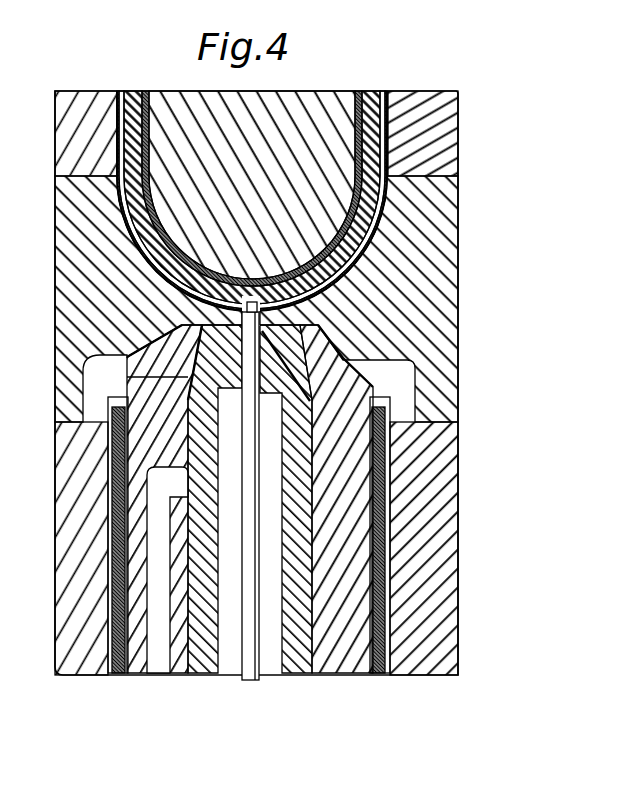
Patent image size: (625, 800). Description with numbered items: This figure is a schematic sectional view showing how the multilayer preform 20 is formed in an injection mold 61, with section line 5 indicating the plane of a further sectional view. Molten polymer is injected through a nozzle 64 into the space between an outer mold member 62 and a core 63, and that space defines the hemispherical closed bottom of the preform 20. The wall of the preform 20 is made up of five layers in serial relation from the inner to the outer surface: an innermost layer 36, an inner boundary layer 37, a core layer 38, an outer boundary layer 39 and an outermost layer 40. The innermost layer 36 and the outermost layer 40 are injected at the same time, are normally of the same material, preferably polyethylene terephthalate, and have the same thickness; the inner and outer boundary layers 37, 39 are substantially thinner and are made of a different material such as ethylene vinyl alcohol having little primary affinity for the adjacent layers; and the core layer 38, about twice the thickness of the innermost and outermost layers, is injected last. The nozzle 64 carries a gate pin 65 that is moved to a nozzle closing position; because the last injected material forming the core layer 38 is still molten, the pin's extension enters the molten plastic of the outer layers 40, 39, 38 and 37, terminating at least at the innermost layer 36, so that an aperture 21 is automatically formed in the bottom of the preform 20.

The section line 5- 5 is at (253, 270).
The multilayer preform 20 is at (400, 138).
The aperture 21 is at (225, 309).
The innermost layer 36 is at (358, 91).
The inner boundary layer 37 is at (365, 91).
The core layer 38 is at (376, 91).
The outer boundary layer 39 is at (381, 91).
The outermost layer 40 is at (387, 91).
The injection mold 61 is at (468, 330).
The outer mold member 62 is at (450, 250).
The core 63 is at (180, 91).
The nozzle 64 is at (197, 663).
The gate pin 65 is at (242, 681).